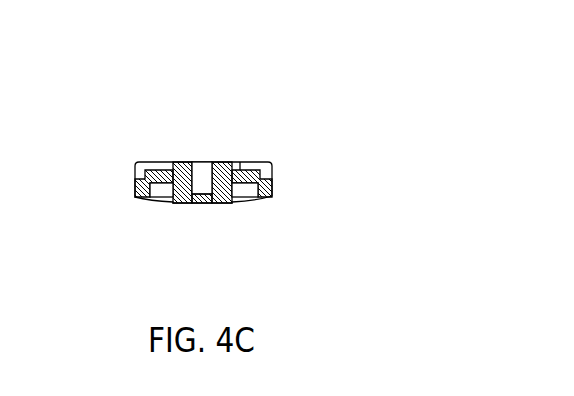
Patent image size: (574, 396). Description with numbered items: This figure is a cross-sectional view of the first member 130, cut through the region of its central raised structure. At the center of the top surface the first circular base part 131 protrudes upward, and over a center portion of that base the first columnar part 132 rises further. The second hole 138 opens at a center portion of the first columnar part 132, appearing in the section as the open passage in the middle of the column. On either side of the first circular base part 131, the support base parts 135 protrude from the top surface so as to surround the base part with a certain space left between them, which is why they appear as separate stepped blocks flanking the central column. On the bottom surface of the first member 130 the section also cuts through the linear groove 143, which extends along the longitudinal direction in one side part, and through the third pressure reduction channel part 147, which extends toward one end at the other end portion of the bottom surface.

The first member 130 is at (374, 91).
The first circular base part 131 is at (163, 162).
The first columnar part 132 is at (227, 162).
The support base parts 135 is at (138, 162).
The second hole 138 is at (202, 162).
The linear groove 143 is at (250, 203).
The third pressure reduction channel part 147 is at (165, 203).